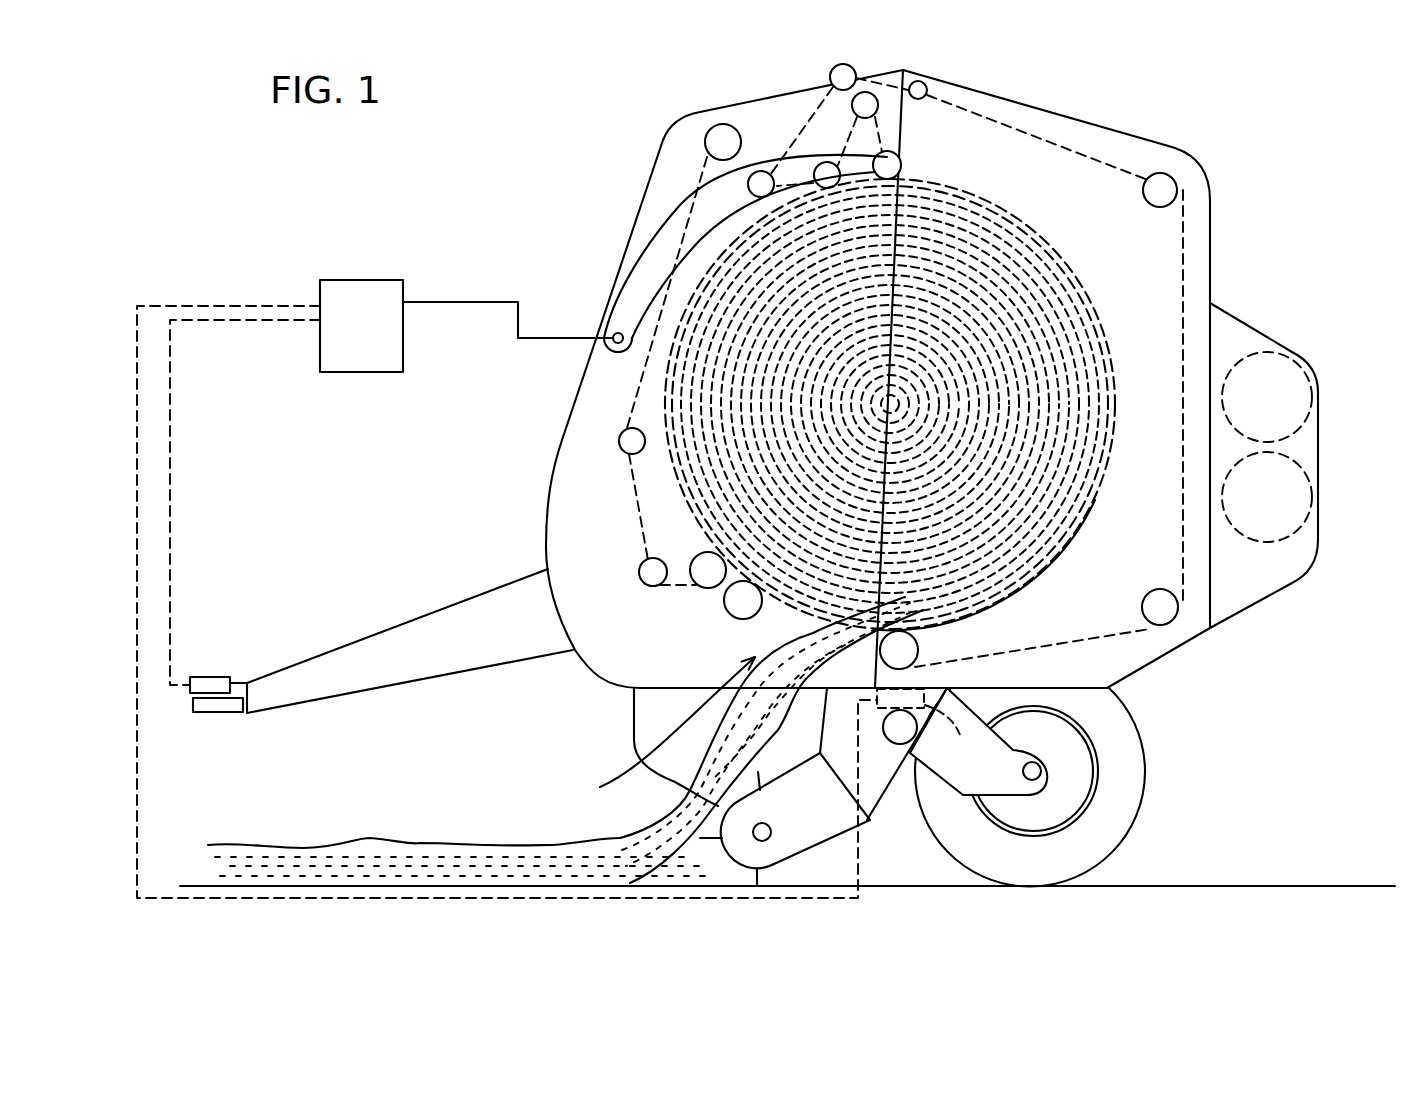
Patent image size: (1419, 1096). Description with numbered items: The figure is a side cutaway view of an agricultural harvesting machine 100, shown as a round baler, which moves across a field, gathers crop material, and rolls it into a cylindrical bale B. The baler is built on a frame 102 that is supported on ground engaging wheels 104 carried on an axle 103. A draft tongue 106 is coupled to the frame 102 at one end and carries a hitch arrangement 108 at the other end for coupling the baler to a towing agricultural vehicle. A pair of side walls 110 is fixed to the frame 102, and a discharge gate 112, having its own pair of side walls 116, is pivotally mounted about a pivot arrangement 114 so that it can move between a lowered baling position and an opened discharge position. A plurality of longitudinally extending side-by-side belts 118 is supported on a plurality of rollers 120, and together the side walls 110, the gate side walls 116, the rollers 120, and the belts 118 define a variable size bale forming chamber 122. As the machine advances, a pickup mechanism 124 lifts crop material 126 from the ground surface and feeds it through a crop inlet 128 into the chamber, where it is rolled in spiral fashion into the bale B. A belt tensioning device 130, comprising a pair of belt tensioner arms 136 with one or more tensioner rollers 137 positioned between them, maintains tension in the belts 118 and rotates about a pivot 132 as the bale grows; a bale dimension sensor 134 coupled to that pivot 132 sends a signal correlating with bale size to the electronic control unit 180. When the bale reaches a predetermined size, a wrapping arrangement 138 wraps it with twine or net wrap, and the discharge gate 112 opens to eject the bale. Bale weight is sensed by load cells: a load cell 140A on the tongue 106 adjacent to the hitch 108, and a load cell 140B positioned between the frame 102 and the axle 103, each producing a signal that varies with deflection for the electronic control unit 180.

The agricultural harvesting machine 100 is at (1105, 72).
The frame 102 is at (922, 783).
The axle 103 is at (897, 745).
The wheels 104 is at (1130, 793).
The draft tongue 106 is at (400, 633).
The hitch arrangement 108 is at (205, 712).
The side walls 110 is at (768, 110).
The discharge gate 112 is at (1212, 232).
The pivot arrangement 114 is at (928, 88).
The discharge gate side walls 116 is at (1105, 170).
The belts 118 is at (1183, 262).
The rollers 120 is at (1168, 185).
The bale forming chamber 122 is at (1077, 597).
The pickup mechanism 124 is at (770, 850).
The crop material 126 is at (418, 845).
The crop inlet 128 is at (627, 782).
The belt tensioning device 130 is at (665, 236).
The pivot 132 is at (605, 336).
The bale dimension sensor 134 is at (620, 336).
The belt tensioner arms 136 is at (702, 207).
The tensioner rollers 137 is at (893, 165).
The wrapping arrangement 138 is at (1310, 390).
The load cell 140A is at (205, 677).
The load cell 140B is at (932, 725).
The electronic control unit 180 is at (377, 290).
The bale B is at (1083, 493).